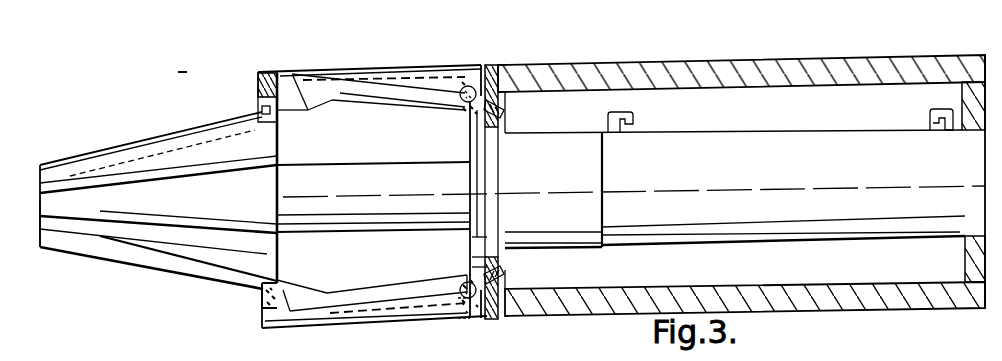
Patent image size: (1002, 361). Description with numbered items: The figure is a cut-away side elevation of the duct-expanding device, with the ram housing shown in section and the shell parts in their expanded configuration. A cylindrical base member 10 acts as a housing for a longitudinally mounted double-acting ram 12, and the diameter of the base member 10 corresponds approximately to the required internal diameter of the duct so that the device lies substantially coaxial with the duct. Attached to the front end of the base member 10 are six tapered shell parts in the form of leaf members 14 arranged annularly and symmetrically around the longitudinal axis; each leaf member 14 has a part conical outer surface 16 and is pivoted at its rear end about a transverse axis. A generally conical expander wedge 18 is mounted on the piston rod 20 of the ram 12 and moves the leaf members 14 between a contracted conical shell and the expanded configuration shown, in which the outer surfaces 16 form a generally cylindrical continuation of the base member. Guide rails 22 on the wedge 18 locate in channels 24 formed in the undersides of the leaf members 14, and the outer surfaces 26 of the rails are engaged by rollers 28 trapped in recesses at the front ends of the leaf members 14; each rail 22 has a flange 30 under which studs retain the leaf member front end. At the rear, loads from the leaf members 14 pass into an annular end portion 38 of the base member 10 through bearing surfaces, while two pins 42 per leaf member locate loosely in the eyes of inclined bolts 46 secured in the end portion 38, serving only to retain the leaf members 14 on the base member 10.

The cylindrical base member 10 is at (790, 56).
The double-acting ram 12 is at (830, 236).
The leaf member 14 is at (396, 70).
The part conical outer surface 16 is at (350, 70).
The expander wedge 18 is at (40, 228).
The piston rod 20 is at (300, 227).
The guide rail 22 is at (117, 178).
The channel 24 is at (256, 300).
The outer surface of rail 26 is at (220, 110).
The roller 28 is at (262, 92).
The flange 30 is at (149, 139).
The annular end portion 38 is at (493, 66).
The pin 42 is at (475, 312).
The inclined bolt 46 is at (503, 96).